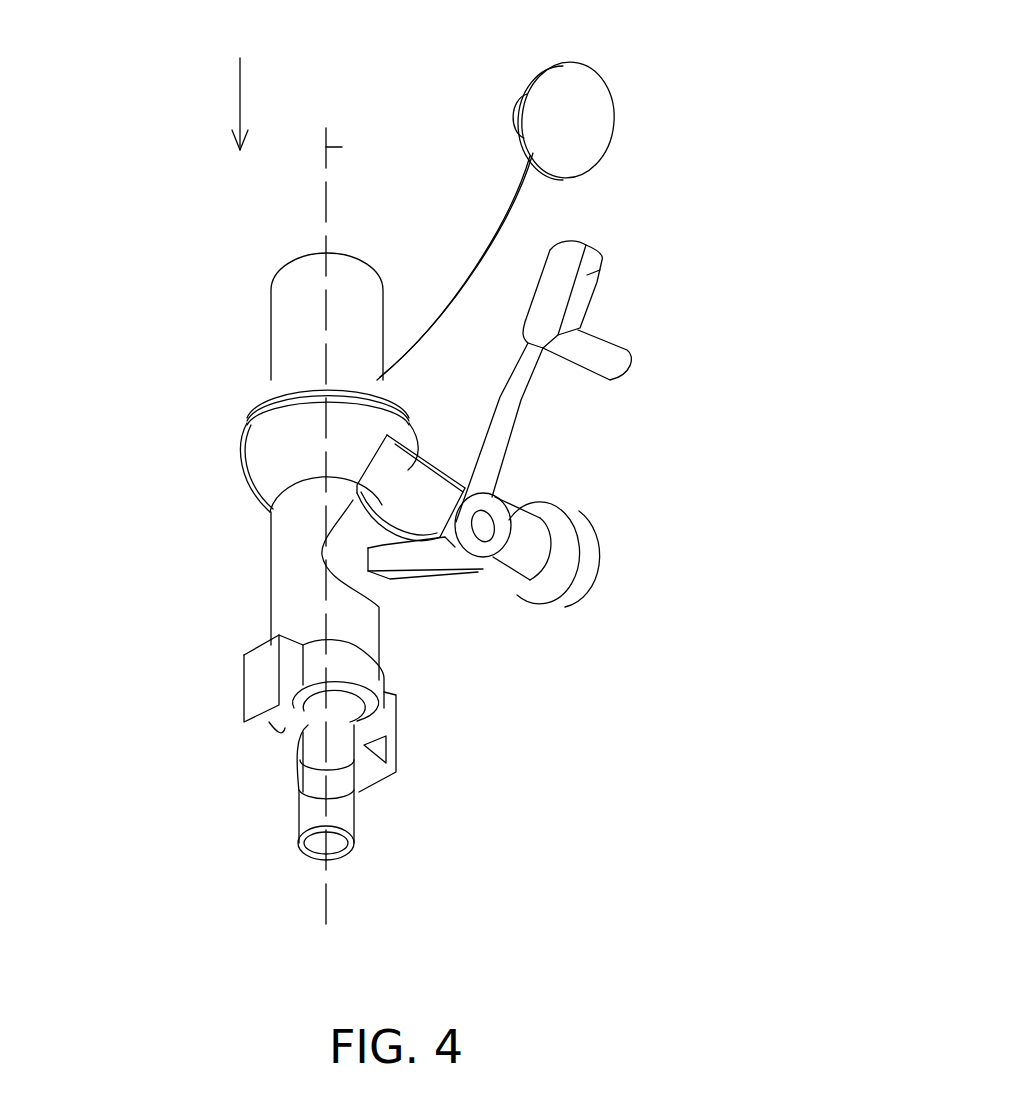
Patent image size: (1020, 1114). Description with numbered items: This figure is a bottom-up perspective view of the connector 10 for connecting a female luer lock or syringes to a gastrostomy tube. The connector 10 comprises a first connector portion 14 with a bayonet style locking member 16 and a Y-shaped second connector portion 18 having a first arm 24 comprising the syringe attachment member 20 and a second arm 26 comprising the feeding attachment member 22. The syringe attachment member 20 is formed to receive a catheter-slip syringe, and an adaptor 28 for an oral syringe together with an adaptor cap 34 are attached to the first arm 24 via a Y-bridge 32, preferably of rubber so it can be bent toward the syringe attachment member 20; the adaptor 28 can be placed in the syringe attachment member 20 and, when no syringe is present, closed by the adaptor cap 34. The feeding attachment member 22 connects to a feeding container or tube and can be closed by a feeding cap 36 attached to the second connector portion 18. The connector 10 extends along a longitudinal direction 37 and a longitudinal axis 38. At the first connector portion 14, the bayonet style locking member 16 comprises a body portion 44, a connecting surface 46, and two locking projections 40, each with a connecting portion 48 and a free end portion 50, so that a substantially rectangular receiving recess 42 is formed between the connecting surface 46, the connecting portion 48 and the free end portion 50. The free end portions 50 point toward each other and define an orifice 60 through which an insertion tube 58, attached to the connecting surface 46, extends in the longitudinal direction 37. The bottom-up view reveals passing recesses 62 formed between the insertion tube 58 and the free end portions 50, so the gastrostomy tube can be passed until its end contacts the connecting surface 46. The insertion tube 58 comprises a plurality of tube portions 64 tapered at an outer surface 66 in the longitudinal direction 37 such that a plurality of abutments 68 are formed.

The connector 10 is at (455, 90).
The first connector portion 14 is at (215, 625).
The bayonet style locking member 16 is at (218, 670).
The second connector portion 18 is at (207, 320).
The syringe attachment member 20 is at (422, 457).
The feeding attachment member 22 is at (357, 262).
The first arm 24 is at (422, 483).
The second arm 26 is at (272, 395).
The adaptor 28 is at (588, 572).
The Y-bridge 32 is at (535, 424).
The adaptor cap 34 is at (609, 347).
The feeding cap 36 is at (612, 80).
The longitudinal direction 37 is at (237, 80).
The longitudinal axis 38 is at (342, 147).
The locking projection 40 is at (258, 684).
The receiving recess 42 is at (376, 744).
The body portion 44 is at (368, 680).
The connecting surface 46 is at (375, 722).
The connecting portion 48 is at (388, 758).
The free end portion 50 is at (275, 720).
The insertion tube 58 is at (341, 864).
The orifice 60 is at (327, 792).
The passing recess 62 is at (301, 740).
The tube portion 64 is at (310, 818).
The outer surface 66 is at (353, 830).
The abutment 68 is at (360, 788).